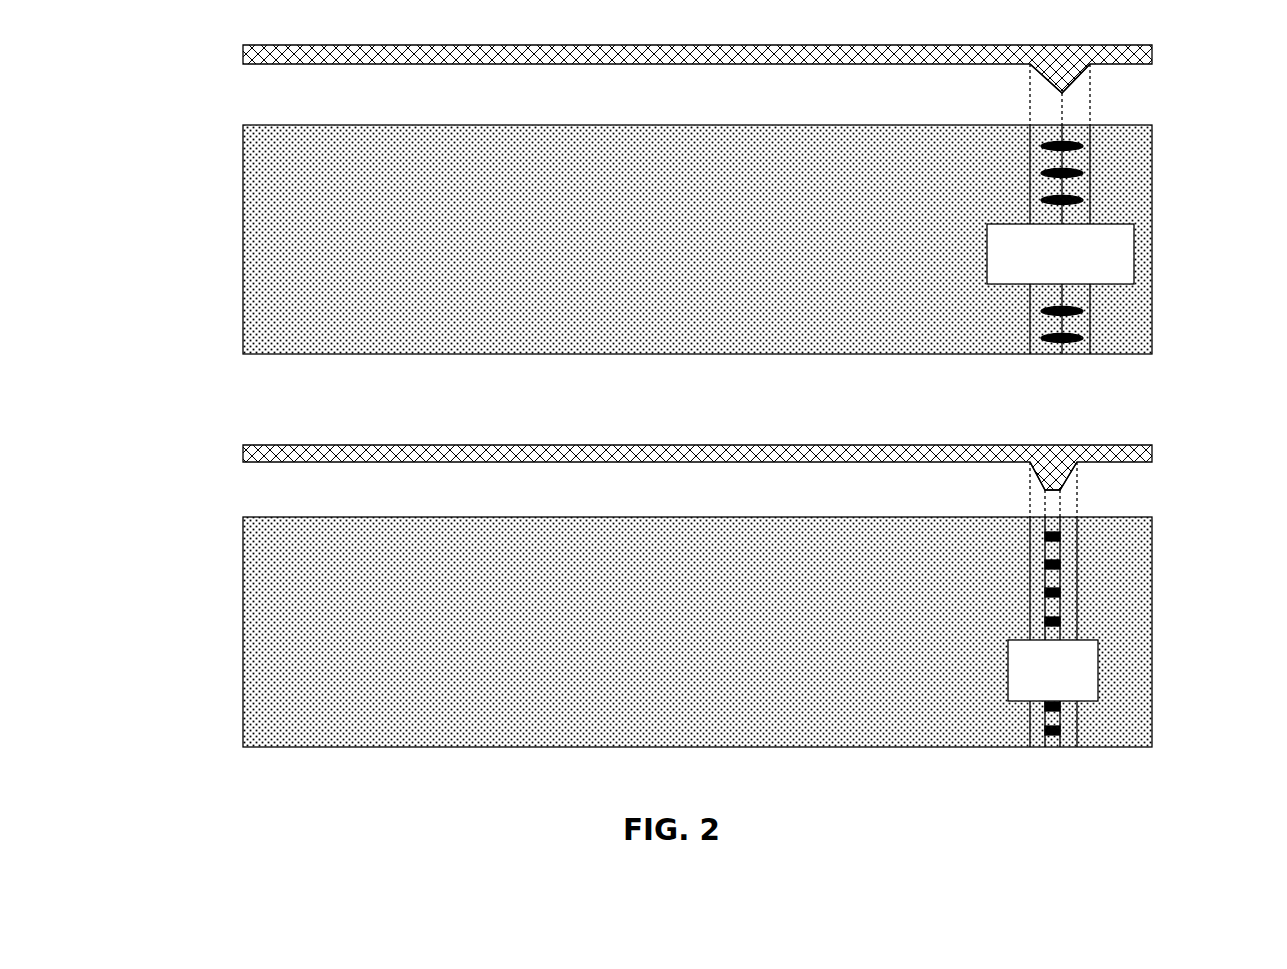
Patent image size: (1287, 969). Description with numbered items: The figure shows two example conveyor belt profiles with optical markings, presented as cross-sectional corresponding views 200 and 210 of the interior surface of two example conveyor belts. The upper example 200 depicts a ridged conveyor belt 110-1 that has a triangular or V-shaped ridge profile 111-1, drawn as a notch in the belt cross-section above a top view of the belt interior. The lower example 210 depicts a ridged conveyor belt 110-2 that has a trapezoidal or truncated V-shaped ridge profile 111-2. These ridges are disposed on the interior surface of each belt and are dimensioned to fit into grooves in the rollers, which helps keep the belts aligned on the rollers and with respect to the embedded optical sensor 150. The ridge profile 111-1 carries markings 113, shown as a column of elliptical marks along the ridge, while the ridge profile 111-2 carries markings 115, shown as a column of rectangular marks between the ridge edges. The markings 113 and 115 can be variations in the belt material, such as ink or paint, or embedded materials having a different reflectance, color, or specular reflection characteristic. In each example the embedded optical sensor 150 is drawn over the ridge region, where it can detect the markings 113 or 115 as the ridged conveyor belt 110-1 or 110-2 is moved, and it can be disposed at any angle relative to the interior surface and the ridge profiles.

The example view of ridged conveyor belt with V-shaped ridge profile 200 is at (150, 125).
The example view of ridged conveyor belt with trapezoidal ridge profile 210 is at (170, 522).
The ridged conveyor belt 110-1 is at (243, 46).
The ridged conveyor belt 110-2 is at (243, 445).
The triangular or V-shaped ridge profile 111-1 is at (1077, 82).
The trapezoidal or truncated V-shaped ridge profile 111-2 is at (1070, 478).
The markings 113 is at (1083, 146).
The markings 115 is at (1062, 537).
The embedded optical sensor 150 is at (1134, 232).